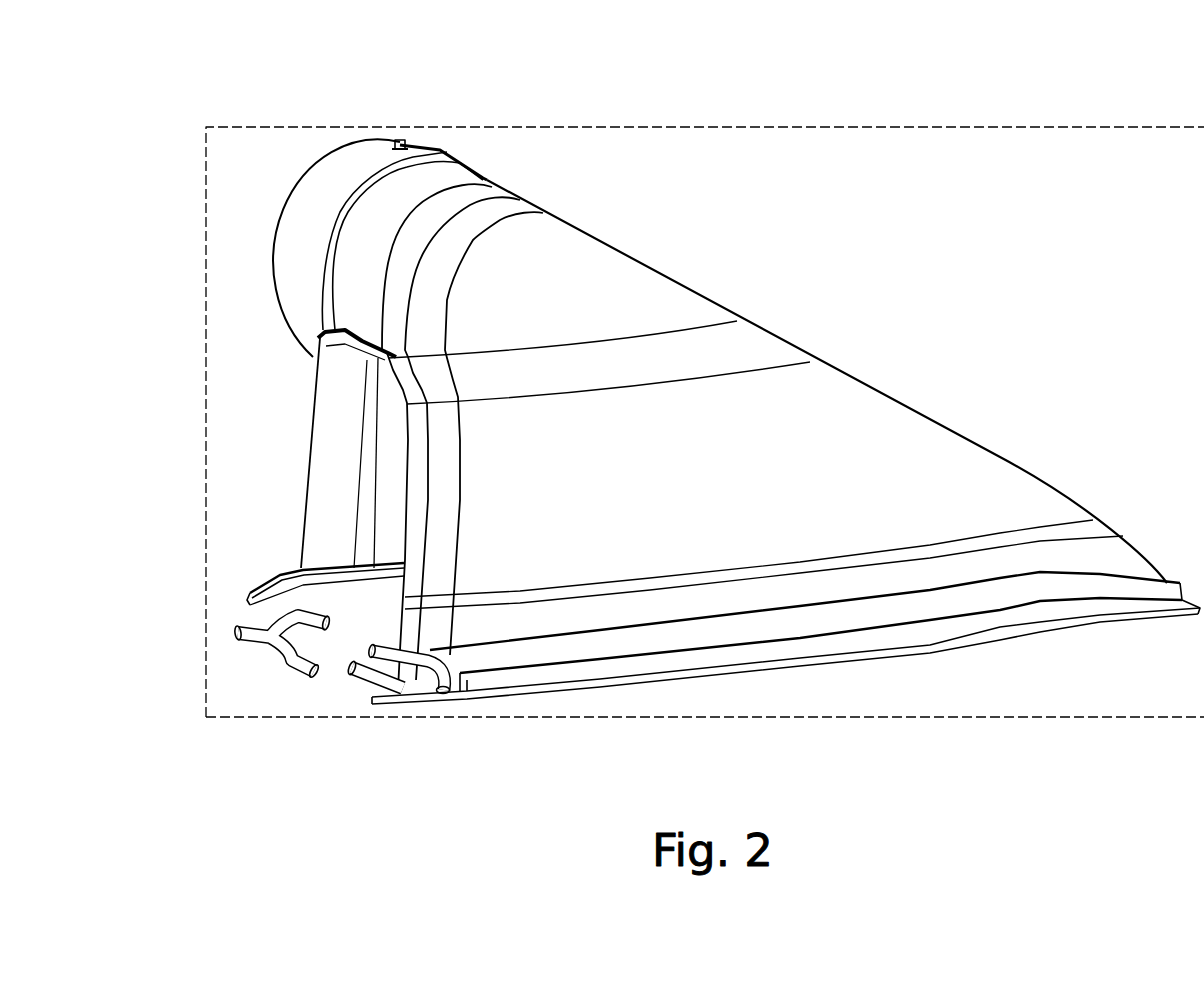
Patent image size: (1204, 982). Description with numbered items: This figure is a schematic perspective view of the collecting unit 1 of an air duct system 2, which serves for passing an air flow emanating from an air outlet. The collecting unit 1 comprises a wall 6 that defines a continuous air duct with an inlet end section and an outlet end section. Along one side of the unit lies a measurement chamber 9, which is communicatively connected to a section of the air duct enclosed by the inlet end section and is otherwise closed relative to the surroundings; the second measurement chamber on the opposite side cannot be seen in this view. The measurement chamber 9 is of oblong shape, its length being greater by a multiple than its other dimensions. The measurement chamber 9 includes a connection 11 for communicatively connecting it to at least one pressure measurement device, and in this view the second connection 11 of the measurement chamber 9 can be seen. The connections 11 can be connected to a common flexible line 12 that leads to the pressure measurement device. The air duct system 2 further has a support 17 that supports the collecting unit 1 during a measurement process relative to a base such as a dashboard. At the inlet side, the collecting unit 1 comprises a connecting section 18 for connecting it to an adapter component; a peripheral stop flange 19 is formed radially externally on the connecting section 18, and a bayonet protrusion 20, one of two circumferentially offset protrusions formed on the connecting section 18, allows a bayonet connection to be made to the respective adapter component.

The collecting unit 1 is at (707, 303).
The air duct system 2 is at (903, 273).
The wall 6 is at (648, 287).
The measurement chamber 9 is at (1112, 582).
The connection 11 is at (367, 673).
The common flexible line 12 is at (260, 642).
The support 17 is at (330, 472).
The connecting section 18 is at (303, 248).
The peripheral stop flange 19 is at (440, 150).
The bayonet protrusion 20 is at (400, 140).